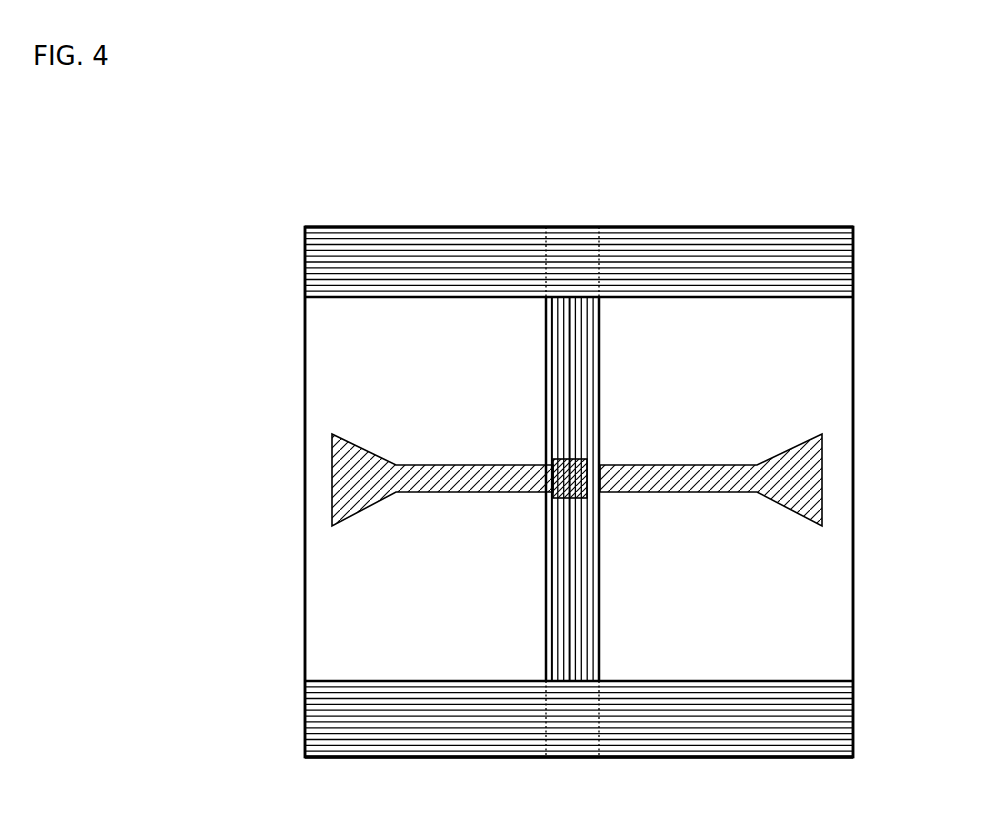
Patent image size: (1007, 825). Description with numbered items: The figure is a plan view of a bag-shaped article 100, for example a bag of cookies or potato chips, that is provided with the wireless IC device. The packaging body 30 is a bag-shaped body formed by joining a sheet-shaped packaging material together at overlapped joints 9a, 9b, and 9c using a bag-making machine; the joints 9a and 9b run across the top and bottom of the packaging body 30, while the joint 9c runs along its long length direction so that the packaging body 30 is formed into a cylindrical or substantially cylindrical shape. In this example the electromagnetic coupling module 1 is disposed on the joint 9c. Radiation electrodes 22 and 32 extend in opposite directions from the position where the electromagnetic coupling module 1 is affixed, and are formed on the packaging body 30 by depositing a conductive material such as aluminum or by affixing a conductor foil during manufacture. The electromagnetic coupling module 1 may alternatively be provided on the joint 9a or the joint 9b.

The bag-shaped article 100 is at (850, 142).
The packaging body 30 is at (843, 369).
The joint 9a is at (838, 270).
The joint 9b is at (840, 713).
The joint 9c is at (593, 383).
The radiation electrode 22 is at (421, 465).
The radiation electrode 32 is at (702, 465).
The electromagnetic coupling module 1 is at (592, 452).